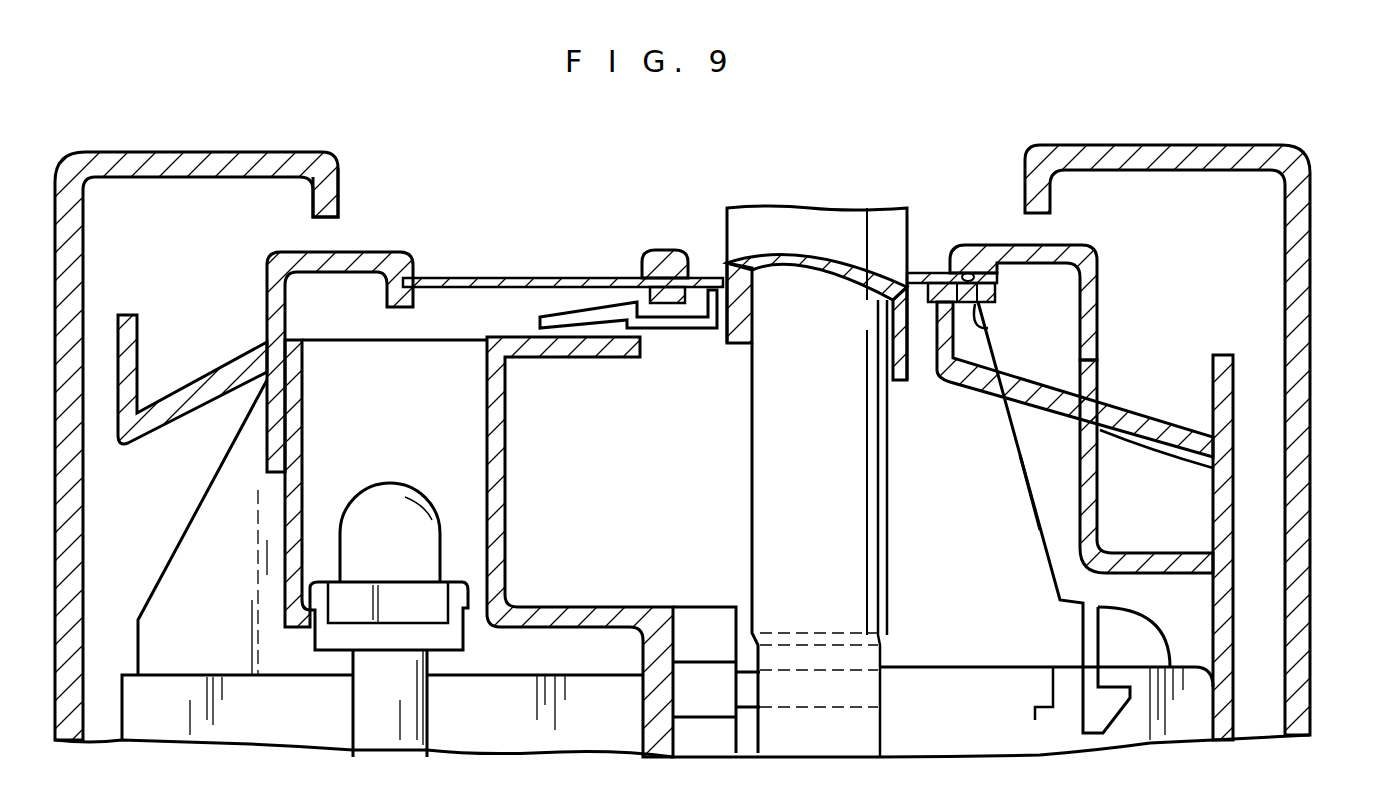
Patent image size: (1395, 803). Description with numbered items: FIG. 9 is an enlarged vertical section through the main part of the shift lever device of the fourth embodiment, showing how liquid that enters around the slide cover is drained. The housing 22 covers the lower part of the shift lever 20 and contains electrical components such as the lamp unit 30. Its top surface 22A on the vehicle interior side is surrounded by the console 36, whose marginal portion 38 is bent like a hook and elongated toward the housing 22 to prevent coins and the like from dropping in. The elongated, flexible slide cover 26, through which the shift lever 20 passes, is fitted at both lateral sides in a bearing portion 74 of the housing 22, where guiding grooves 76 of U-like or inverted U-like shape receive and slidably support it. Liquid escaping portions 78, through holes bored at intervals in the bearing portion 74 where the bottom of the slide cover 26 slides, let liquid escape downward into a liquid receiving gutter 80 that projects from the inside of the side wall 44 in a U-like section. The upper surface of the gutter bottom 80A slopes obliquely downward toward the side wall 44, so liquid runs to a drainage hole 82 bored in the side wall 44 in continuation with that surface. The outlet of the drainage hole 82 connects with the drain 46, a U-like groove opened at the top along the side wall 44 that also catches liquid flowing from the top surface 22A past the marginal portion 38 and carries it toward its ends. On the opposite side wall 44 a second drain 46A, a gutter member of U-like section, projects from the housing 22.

The shift lever 20 is at (802, 223).
The housing 22 is at (982, 244).
The top surface 22A is at (377, 250).
The slide cover 26 is at (707, 273).
The lamp unit 30 is at (393, 507).
The console 36 is at (235, 167).
The marginal portion 38 is at (340, 200).
The side wall 44 is at (1098, 315).
The drain 46 is at (1180, 425).
The drain 46A is at (187, 387).
The bearing portion 74 is at (1070, 240).
The guiding grooves 76 is at (697, 270).
The liquid escaping portions 78 is at (987, 330).
The liquid receiving gutter 80 is at (933, 363).
The bottom 80A is at (1030, 377).
The drainage hole 82 is at (1100, 375).